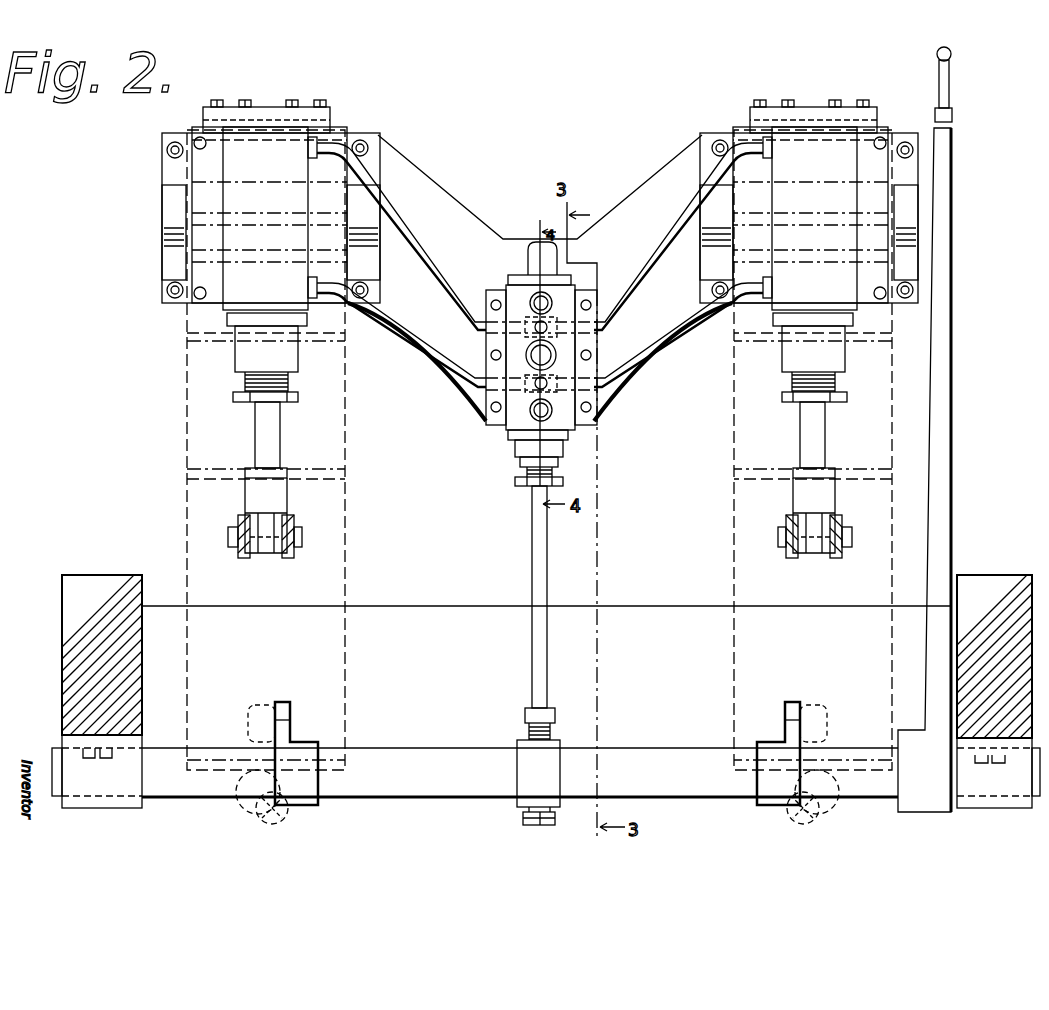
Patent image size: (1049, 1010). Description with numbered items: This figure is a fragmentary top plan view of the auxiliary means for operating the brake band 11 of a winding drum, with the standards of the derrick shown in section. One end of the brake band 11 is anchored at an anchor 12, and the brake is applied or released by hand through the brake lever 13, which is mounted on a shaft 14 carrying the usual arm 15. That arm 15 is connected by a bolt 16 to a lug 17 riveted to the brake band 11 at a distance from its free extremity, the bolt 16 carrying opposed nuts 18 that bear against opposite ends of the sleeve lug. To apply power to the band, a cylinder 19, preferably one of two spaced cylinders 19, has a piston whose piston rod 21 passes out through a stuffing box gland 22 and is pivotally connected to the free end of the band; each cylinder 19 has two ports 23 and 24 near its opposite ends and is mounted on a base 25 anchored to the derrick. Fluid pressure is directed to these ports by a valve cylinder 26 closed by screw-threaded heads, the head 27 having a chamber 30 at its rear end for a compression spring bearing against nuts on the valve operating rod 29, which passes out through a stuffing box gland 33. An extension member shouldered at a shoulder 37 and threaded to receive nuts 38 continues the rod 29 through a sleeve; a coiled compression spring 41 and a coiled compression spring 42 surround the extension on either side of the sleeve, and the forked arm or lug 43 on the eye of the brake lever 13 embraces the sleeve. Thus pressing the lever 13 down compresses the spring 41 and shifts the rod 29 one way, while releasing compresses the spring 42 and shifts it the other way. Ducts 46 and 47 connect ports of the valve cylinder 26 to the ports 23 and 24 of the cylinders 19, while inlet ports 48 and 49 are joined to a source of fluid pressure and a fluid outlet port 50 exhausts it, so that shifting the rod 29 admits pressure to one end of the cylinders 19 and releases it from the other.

The brake band 11 is at (187, 408).
The anchor 12 is at (243, 265).
The brake lever 13 is at (952, 411).
The shaft 14 is at (388, 799).
The arm 15 is at (292, 731).
The bolt 16 is at (222, 822).
The lug 17 is at (300, 830).
The opposed nuts 18 is at (292, 848).
The cylinder 19 is at (540, 201).
The piston rod 21 is at (258, 432).
The stuffing box gland 22 is at (250, 380).
The port 23 is at (322, 305).
The port 24 is at (335, 142).
The base 25 is at (425, 188).
The valve cylinder 26 is at (565, 347).
The head 27 is at (572, 279).
The valve operating rod 29 is at (538, 525).
The chamber 30 is at (540, 238).
The gland 33 is at (548, 470).
The shoulder 37 is at (523, 717).
The nuts 38 is at (546, 826).
The coiled compression spring 41 is at (530, 823).
The coiled compression spring 42 is at (553, 735).
The forked arm or lug 43 is at (531, 775).
The duct 46 is at (396, 336).
The duct 47 is at (427, 255).
The inlet port 48 is at (518, 424).
The inlet port 49 is at (528, 298).
The fluid outlet port 50 is at (493, 355).